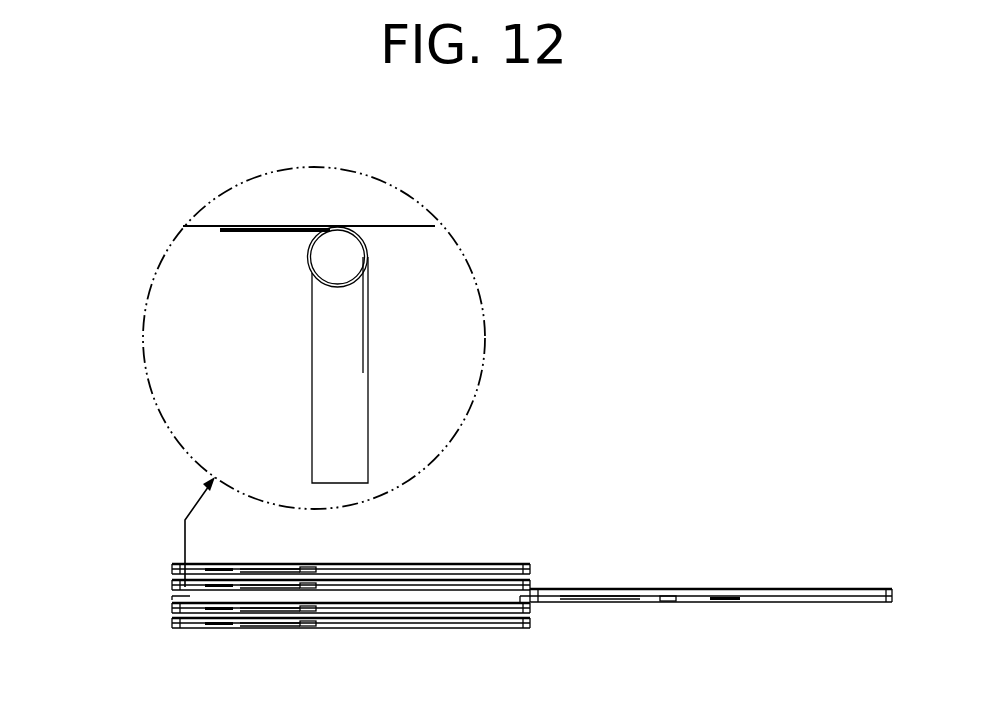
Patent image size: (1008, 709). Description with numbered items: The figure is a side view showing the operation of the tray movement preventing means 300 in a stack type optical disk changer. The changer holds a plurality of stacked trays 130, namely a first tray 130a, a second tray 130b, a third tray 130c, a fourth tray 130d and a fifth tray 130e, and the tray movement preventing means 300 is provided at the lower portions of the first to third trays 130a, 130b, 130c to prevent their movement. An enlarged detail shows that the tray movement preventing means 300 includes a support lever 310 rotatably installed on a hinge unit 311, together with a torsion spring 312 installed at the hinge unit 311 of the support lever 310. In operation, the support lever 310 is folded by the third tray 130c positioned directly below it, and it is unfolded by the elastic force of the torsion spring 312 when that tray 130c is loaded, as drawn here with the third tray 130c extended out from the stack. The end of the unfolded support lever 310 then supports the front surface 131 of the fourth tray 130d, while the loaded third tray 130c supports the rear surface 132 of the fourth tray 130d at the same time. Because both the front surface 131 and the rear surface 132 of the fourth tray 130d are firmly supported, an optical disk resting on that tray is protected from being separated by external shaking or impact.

The trays 130 is at (97, 548).
The first tray 130a is at (172, 567).
The second tray 130b is at (298, 182).
The third tray 130c is at (795, 592).
The fourth tray 130d is at (172, 605).
The fifth tray 130e is at (172, 622).
The front surface 131 is at (198, 592).
The rear surface 132 is at (520, 601).
The tray movement preventing means 300 is at (77, 258).
The support lever 310 is at (327, 383).
The hinge unit 311 is at (323, 256).
The torsion spring 312 is at (365, 325).